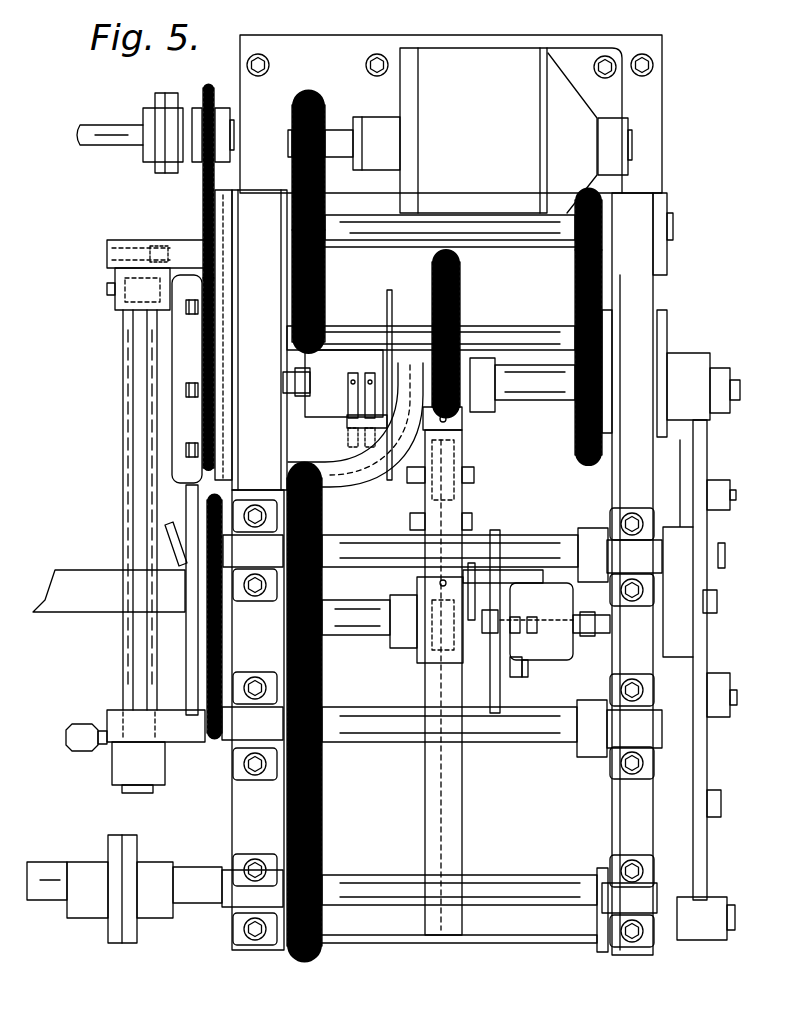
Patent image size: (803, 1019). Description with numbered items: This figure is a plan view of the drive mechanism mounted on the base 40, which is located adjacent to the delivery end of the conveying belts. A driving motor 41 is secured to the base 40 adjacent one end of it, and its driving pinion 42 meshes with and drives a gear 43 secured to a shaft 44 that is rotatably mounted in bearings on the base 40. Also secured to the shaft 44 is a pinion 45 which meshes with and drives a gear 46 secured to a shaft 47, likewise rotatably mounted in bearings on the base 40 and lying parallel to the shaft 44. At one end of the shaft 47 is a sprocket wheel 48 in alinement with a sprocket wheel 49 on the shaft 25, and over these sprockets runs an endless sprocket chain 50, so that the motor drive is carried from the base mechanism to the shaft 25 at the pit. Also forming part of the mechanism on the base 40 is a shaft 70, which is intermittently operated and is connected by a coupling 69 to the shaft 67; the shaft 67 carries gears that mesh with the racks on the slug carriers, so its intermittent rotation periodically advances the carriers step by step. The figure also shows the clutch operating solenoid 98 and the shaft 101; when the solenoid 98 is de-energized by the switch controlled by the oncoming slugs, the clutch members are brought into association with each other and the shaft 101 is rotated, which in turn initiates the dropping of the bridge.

The shaft 25 is at (124, 130).
The base 40 is at (657, 133).
The driving motor 41 is at (460, 130).
The driving pinion 42 is at (309, 107).
The gear 43 is at (325, 290).
The shaft 44 is at (522, 236).
The pinion 45 is at (600, 220).
The gear 46 is at (598, 378).
The shaft 47 is at (534, 332).
The sprocket wheel 48 is at (200, 358).
The sprocket wheel 49 is at (208, 90).
The endless sprocket chain 50 is at (204, 185).
The shaft 67 is at (58, 893).
The coupling 69 is at (118, 944).
The shaft 70 is at (358, 882).
The clutch operating solenoid 98 is at (550, 660).
The shaft 101 is at (364, 629).